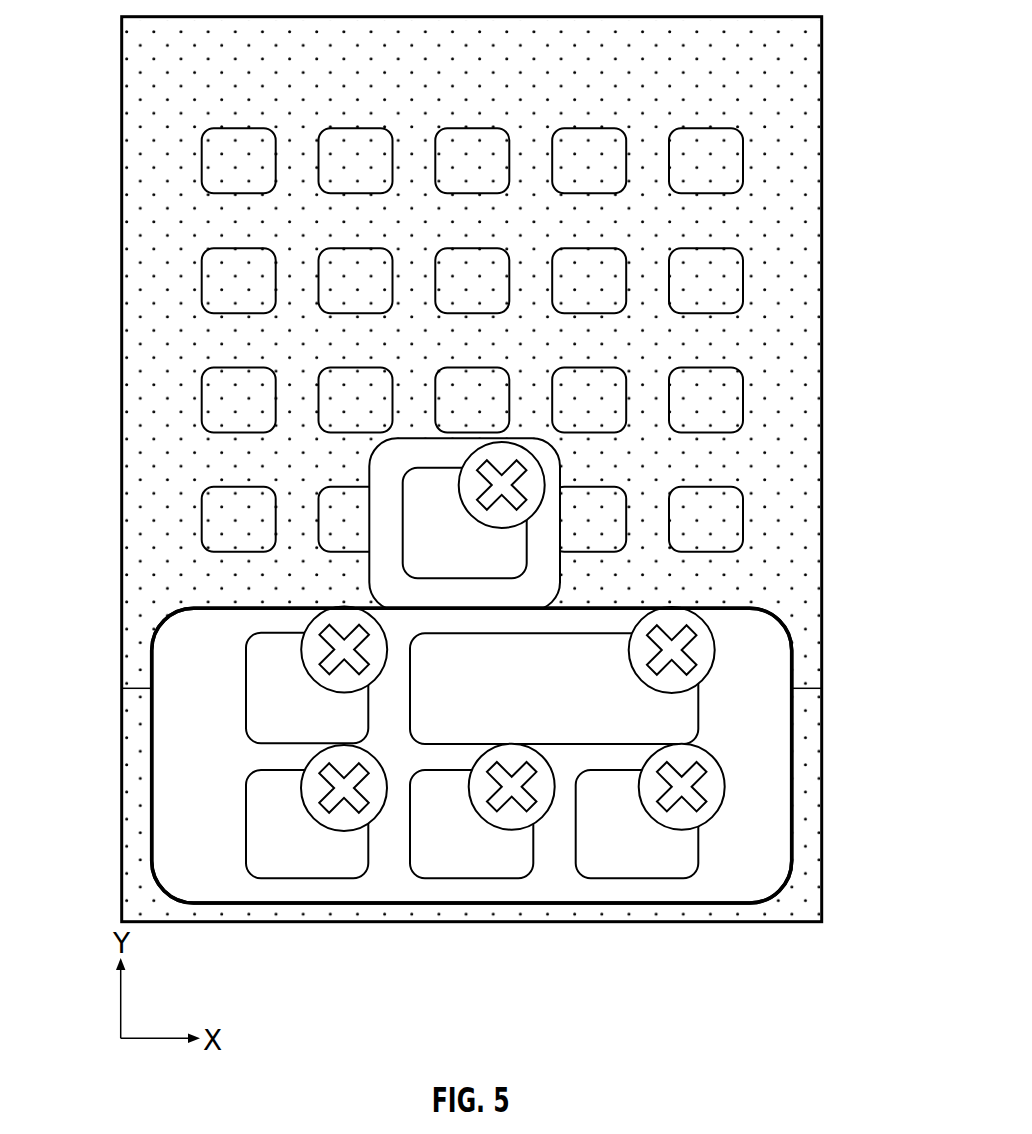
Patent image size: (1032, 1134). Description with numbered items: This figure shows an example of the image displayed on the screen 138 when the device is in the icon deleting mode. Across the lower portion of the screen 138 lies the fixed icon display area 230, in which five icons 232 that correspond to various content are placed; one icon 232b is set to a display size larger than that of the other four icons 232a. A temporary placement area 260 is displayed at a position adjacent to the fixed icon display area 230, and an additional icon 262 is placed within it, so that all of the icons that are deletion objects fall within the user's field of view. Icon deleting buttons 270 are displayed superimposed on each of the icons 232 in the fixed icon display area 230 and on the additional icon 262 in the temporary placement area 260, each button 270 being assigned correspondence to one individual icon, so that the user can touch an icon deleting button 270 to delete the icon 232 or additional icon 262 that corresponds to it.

The screen 138 is at (140, 73).
The fixed icon display area 230 is at (768, 737).
The icons 232 is at (577, 816).
The icons 232a is at (306, 859).
The icon 232b is at (670, 710).
The temporary placement area 260 is at (547, 565).
The additional icon 262 is at (507, 535).
The icon deleting buttons 270 is at (547, 485).